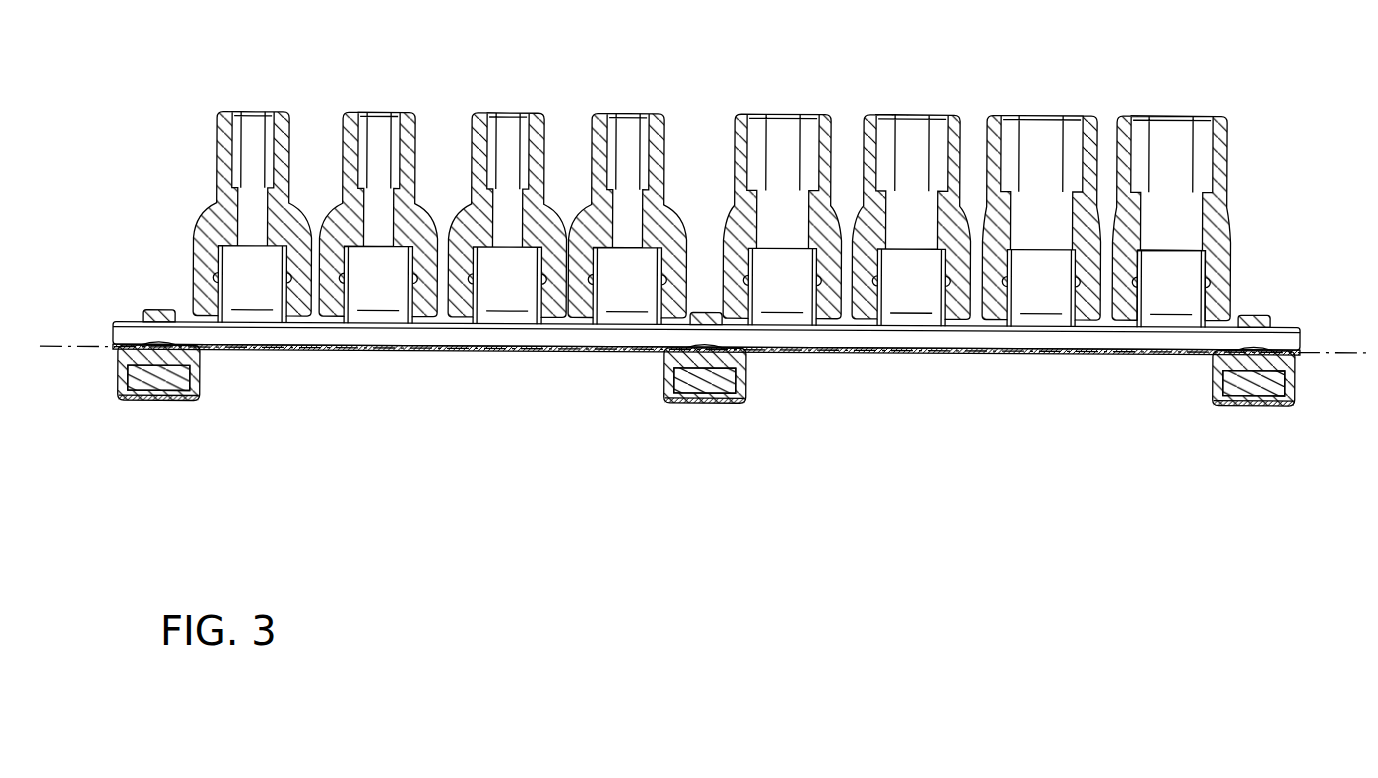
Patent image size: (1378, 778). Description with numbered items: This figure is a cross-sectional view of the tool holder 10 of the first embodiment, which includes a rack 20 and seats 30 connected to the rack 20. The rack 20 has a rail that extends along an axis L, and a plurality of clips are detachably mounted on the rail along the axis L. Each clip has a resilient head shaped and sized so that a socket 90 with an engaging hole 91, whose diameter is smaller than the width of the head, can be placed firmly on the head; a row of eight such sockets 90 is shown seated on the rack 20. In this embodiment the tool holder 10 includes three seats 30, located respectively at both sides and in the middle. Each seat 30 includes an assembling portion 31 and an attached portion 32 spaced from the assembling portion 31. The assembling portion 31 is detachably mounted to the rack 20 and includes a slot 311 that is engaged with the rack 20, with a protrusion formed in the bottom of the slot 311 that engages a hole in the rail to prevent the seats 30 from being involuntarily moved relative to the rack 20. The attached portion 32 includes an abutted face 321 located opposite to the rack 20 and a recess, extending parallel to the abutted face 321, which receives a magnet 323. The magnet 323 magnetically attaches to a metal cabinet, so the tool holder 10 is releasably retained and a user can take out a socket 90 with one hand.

The tool holder 10 is at (706, 379).
The rack 20 is at (890, 362).
The seat 30 is at (706, 435).
The assembling portion 31 is at (707, 307).
The slot 311 is at (719, 326).
The attached portion 32 is at (657, 422).
The abutted face 321 is at (679, 422).
The magnet 323 is at (703, 427).
The socket 90 is at (745, 181).
The engaging hole 91 is at (1197, 260).
The axis L is at (1353, 346).